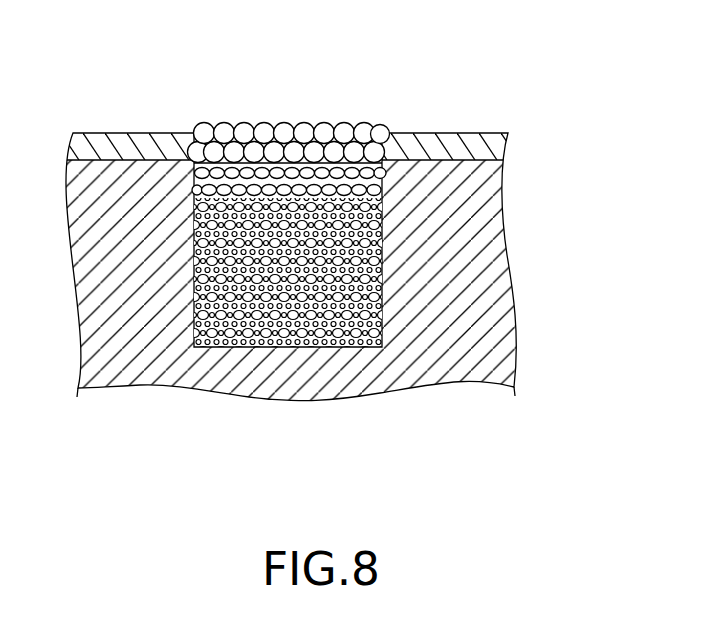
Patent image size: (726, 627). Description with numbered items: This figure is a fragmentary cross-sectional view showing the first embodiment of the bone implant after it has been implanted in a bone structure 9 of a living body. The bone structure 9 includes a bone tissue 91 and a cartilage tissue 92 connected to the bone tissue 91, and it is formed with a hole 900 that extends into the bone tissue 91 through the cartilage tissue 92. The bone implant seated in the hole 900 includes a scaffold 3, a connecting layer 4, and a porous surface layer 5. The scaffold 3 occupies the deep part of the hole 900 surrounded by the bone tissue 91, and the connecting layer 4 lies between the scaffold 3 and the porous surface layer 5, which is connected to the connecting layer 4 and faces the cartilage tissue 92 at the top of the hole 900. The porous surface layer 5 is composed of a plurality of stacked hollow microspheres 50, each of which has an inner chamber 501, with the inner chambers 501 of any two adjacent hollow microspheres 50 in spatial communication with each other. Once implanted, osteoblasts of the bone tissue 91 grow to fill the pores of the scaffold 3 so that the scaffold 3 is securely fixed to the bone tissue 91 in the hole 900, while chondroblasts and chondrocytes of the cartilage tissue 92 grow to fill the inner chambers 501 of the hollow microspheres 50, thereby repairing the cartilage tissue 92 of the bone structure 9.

The bone structure 9 is at (315, 210).
The bone tissue 91 is at (497, 238).
The cartilage tissue 92 is at (447, 133).
The connecting layer 4 is at (193, 176).
The porous surface layer 5 is at (296, 83).
The hollow microspheres 50 is at (296, 101).
The inner chamber 501 is at (342, 127).
The scaffold 3 is at (272, 311).
The hole 900 is at (218, 347).